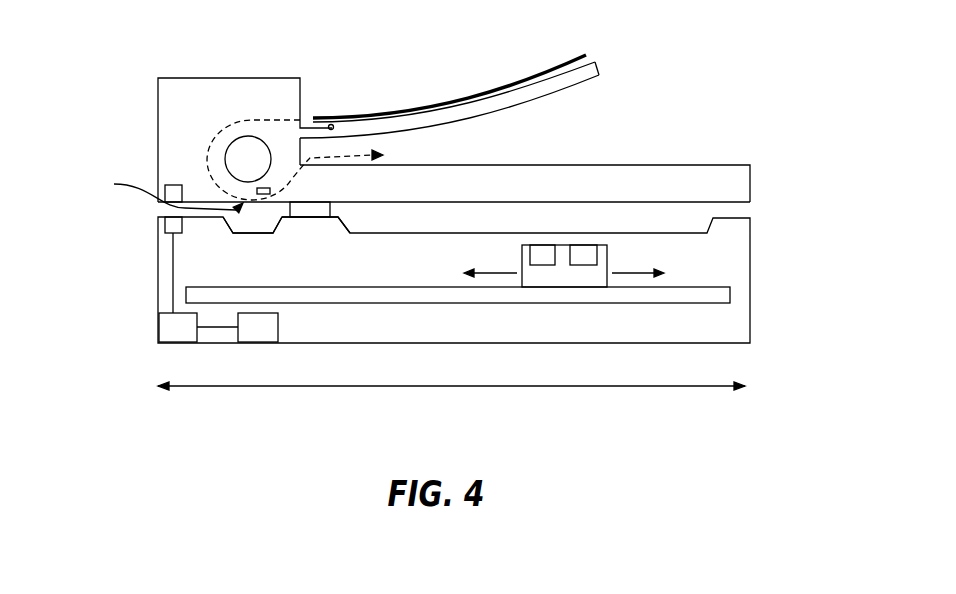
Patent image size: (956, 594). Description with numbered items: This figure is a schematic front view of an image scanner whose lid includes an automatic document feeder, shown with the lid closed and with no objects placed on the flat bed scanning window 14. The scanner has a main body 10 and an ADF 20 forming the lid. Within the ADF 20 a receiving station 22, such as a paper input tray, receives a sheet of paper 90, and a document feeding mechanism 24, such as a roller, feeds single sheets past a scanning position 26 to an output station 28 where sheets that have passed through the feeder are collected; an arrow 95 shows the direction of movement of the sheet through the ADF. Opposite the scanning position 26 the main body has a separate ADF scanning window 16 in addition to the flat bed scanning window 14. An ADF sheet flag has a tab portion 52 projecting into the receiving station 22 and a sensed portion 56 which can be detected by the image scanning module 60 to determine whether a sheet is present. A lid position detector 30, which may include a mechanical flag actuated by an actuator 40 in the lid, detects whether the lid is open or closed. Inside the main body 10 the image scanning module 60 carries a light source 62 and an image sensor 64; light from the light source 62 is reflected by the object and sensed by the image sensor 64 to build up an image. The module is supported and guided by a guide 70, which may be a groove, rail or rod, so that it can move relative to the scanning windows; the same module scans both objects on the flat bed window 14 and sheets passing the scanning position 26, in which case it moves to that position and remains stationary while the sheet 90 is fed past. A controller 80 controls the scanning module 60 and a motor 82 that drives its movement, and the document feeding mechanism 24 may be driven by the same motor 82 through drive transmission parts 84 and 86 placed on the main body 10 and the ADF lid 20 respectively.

The main body 10 is at (130, 280).
The flat bed scanning window 14 is at (432, 235).
The ADF scanning window 16 is at (248, 225).
The ADF 20 is at (130, 104).
The receiving station 22 is at (558, 91).
The document feeding mechanism 24 is at (238, 168).
The scanning position 26 is at (165, 193).
The output station 28 is at (463, 165).
The lid position detector 30 is at (310, 228).
The actuator 40 is at (315, 210).
The tab portion 52 is at (333, 126).
The sensed portion 56 is at (270, 191).
The image scanning module 60 is at (563, 270).
The light source 62 is at (538, 262).
The image sensor 64 is at (588, 255).
The guide 70 is at (727, 290).
The controller 80 is at (258, 327).
The motor 82 is at (198, 327).
The drive transmission part 84 is at (165, 227).
The drive transmission part 86 is at (170, 185).
The sheet of paper 90 is at (553, 73).
The arrow 95 is at (216, 128).